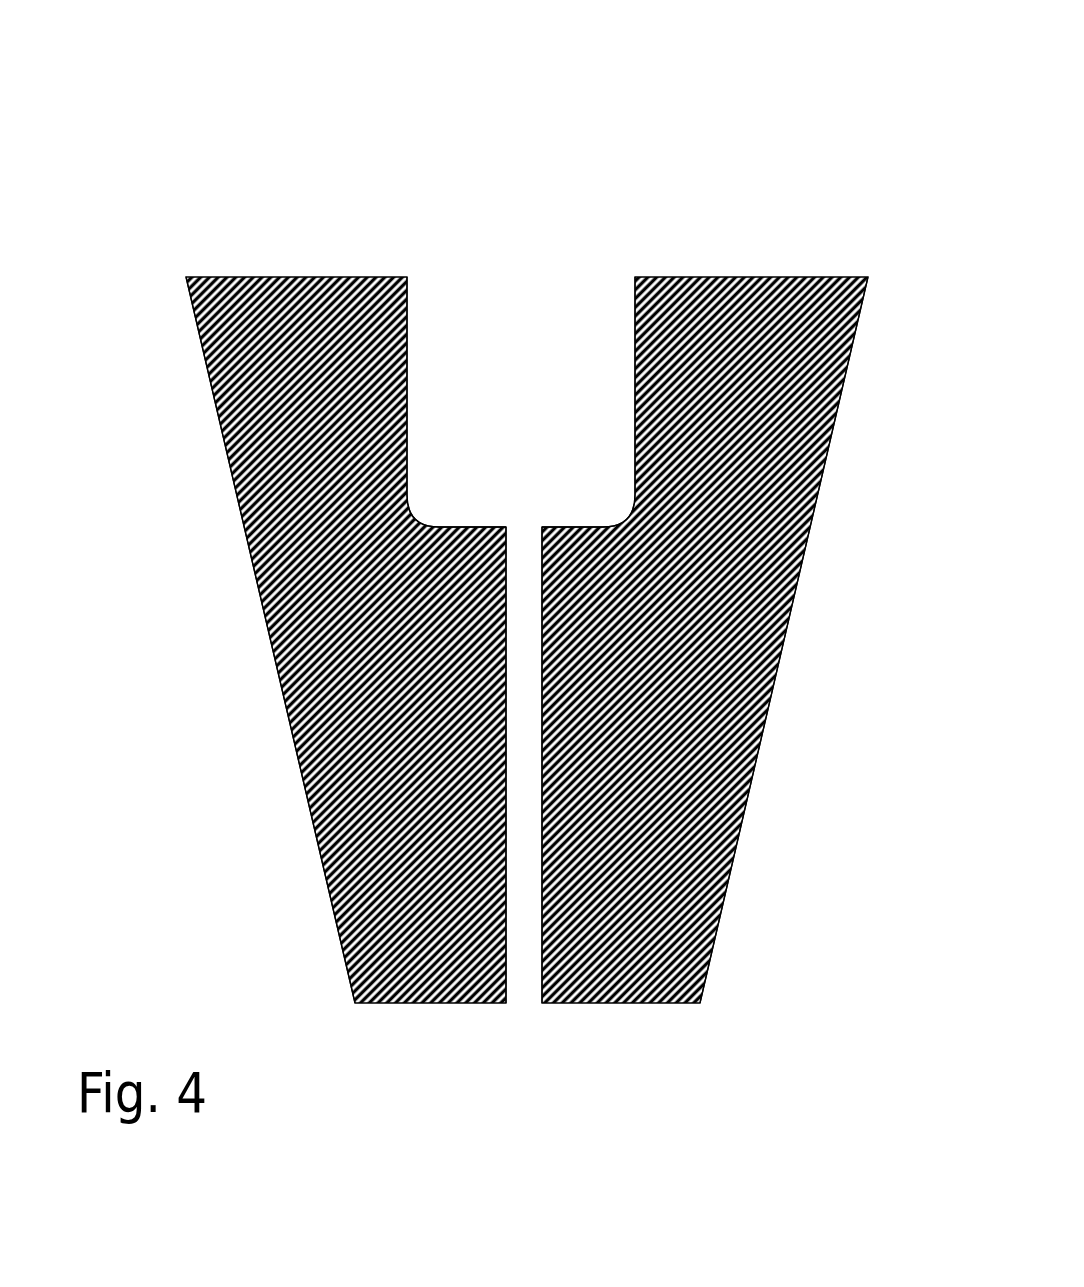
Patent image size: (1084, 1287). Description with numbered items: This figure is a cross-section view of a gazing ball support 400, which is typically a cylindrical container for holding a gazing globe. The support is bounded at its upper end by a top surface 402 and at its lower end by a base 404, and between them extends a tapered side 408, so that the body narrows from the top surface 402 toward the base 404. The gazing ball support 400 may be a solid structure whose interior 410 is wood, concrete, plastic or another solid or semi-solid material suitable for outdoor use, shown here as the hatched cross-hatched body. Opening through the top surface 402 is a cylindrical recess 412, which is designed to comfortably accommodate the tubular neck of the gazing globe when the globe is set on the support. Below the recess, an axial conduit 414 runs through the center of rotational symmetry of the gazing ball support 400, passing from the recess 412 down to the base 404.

The gazing ball support 400 is at (496, 582).
The top surface 402 is at (277, 510).
The base 404 is at (743, 693).
The tapered side 408 is at (208, 565).
The interior 410 is at (774, 558).
The cylindrical recess 412 is at (469, 313).
The axial conduit 414 is at (516, 942).